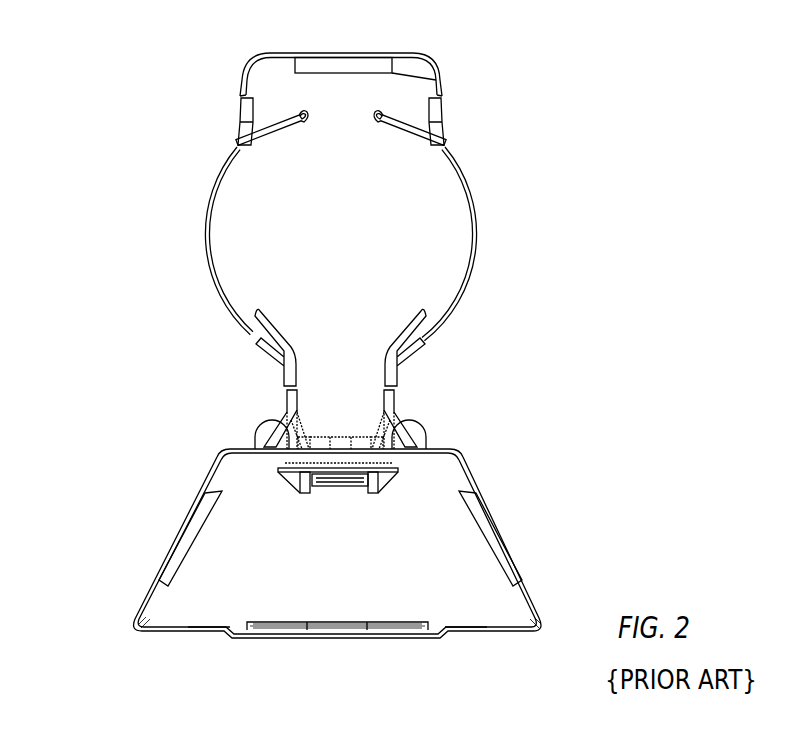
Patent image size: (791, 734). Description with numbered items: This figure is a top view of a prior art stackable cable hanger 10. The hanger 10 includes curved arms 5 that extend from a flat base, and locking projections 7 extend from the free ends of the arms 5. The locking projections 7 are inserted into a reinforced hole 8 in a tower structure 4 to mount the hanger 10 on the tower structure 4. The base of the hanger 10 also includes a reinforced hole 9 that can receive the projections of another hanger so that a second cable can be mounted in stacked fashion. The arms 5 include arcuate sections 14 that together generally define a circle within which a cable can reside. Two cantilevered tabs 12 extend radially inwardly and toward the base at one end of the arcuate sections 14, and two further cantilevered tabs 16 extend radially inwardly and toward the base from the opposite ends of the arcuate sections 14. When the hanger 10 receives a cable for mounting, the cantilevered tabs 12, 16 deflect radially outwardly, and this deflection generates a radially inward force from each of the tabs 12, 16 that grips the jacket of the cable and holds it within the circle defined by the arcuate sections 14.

The tower structure 4 is at (497, 637).
The curved arms 5 is at (117, 361).
The locking projections 7 is at (377, 494).
The reinforced hole 8 is at (373, 461).
The reinforced hole 9 is at (315, 72).
The cable hanger 10 is at (598, 270).
The cantilevered tabs 12 is at (286, 127).
The arcuate sections 14 is at (205, 255).
The cantilevered tabs 16 is at (402, 323).